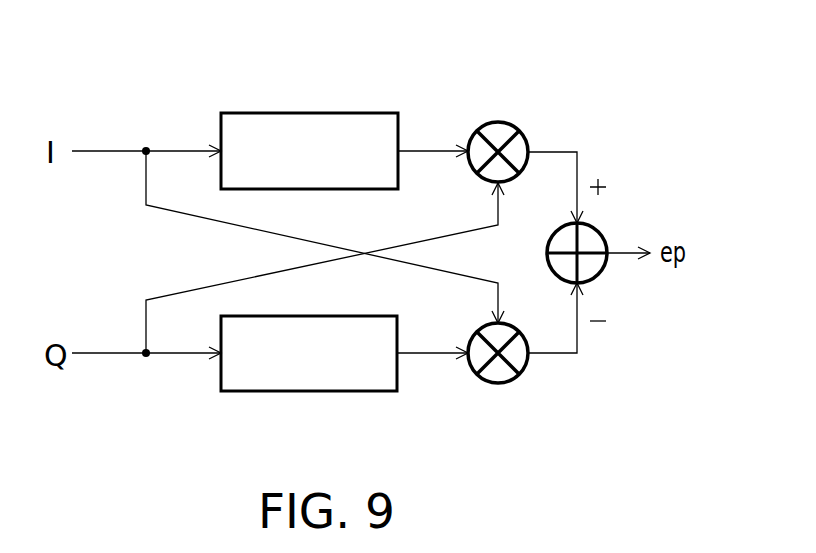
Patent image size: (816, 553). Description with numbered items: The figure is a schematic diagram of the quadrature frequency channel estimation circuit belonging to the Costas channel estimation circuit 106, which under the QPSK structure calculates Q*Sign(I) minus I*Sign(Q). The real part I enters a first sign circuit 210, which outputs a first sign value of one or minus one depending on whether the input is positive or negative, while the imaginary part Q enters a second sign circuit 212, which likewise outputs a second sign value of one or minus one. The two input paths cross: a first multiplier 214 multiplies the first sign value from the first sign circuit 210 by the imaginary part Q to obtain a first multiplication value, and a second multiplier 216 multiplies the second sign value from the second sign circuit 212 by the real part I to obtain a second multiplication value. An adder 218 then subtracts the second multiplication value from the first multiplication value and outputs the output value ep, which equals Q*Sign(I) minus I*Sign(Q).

The Costas channel estimation circuit 106 is at (548, 83).
The first sign circuit 210 is at (340, 113).
The second sign circuit 212 is at (340, 391).
The first multiplier 214 is at (481, 129).
The second multiplier 216 is at (483, 378).
The adder 218 is at (602, 232).